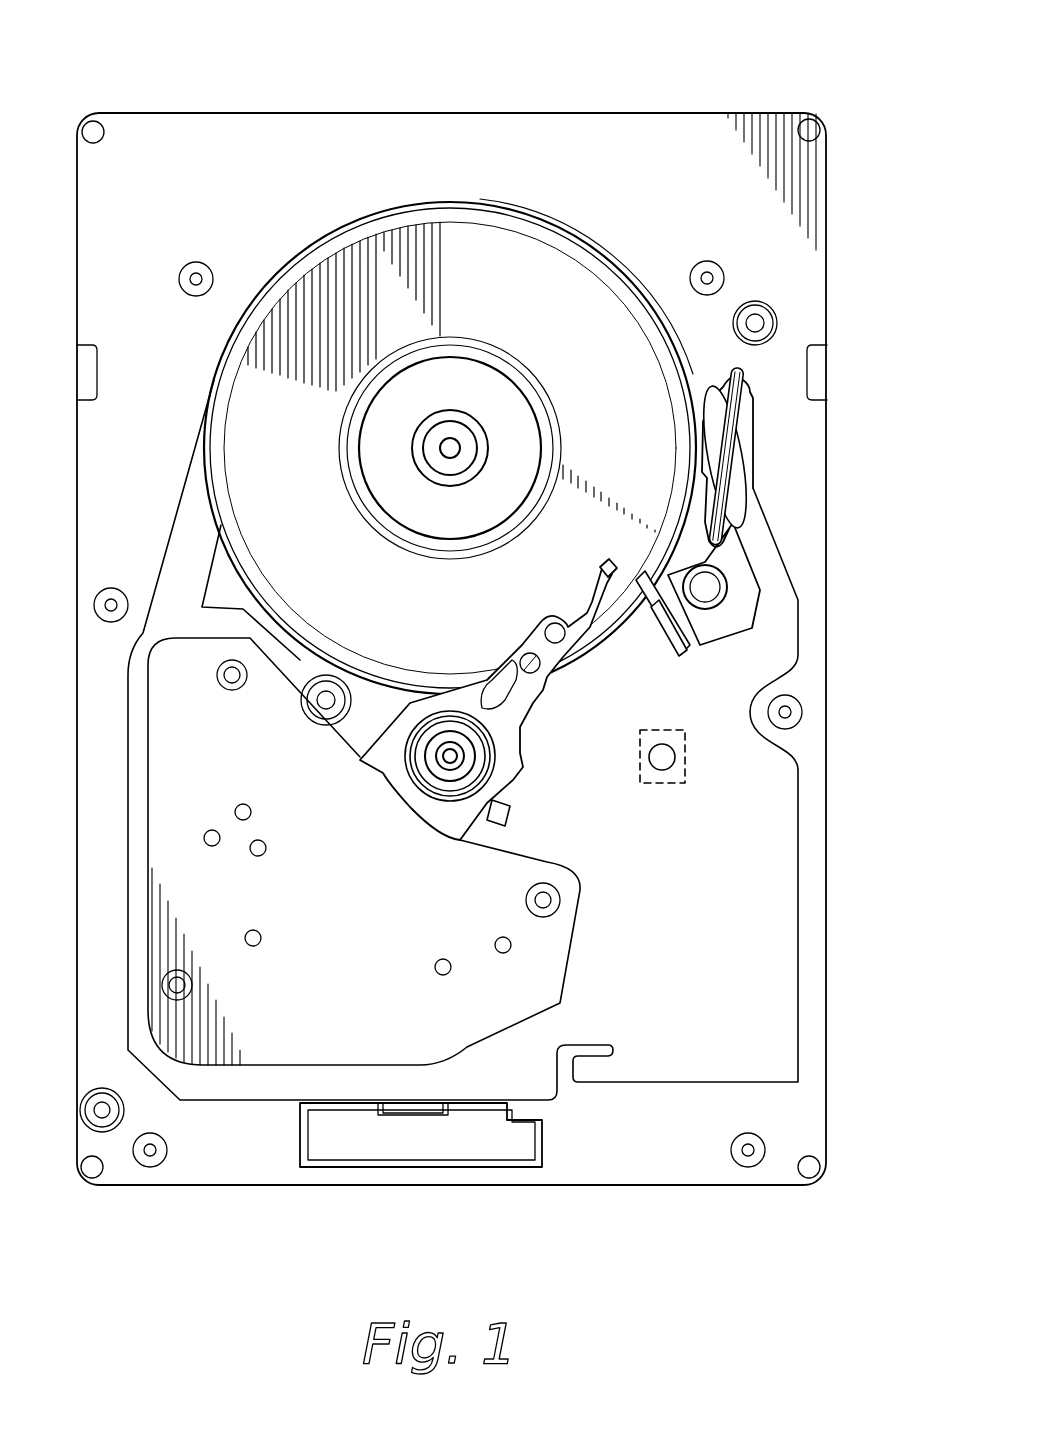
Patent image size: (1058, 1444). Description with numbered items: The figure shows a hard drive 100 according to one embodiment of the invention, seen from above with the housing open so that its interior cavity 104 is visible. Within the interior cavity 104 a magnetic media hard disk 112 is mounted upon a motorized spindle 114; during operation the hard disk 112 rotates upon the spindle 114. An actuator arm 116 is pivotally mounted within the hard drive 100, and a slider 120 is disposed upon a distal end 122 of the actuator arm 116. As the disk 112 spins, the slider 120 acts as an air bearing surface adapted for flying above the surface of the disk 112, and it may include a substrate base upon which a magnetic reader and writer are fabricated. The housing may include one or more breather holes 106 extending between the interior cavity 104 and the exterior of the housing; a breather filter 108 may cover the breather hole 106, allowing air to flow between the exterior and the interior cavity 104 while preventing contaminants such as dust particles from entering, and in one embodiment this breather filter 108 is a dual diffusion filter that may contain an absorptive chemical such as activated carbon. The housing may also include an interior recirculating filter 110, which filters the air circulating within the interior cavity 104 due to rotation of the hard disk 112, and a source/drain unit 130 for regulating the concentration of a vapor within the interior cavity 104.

The hard drive 100 is at (708, 40).
The interior cavity 104 is at (692, 961).
The breather hole 106 is at (660, 750).
The breather filter 108 is at (640, 733).
The interior recirculating filter 110 is at (737, 458).
The magnetic media hard disk 112 is at (445, 233).
The motorized spindle 114 is at (500, 392).
The actuator arm 116 is at (508, 752).
The slider 120 is at (602, 570).
The distal end 122 is at (540, 640).
The source/drain unit 130 is at (417, 1137).